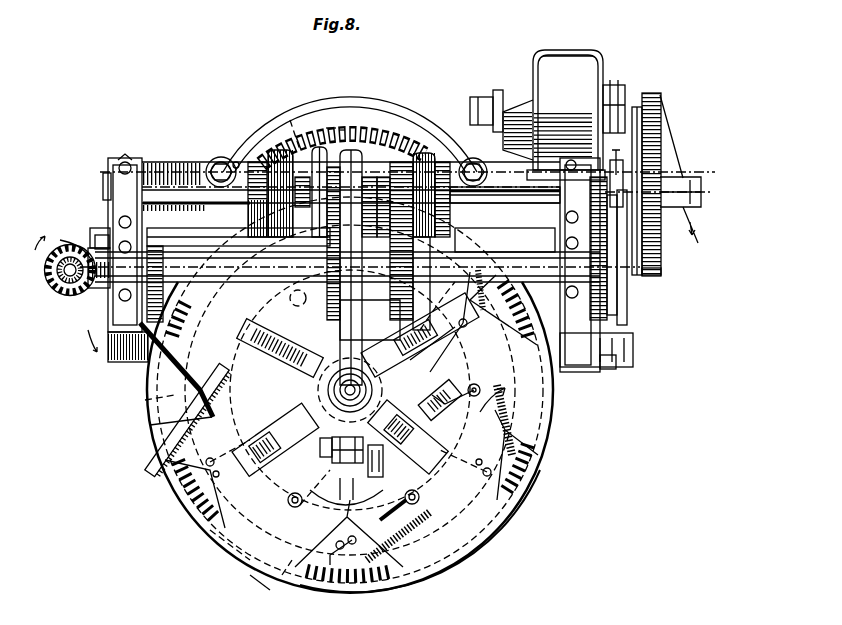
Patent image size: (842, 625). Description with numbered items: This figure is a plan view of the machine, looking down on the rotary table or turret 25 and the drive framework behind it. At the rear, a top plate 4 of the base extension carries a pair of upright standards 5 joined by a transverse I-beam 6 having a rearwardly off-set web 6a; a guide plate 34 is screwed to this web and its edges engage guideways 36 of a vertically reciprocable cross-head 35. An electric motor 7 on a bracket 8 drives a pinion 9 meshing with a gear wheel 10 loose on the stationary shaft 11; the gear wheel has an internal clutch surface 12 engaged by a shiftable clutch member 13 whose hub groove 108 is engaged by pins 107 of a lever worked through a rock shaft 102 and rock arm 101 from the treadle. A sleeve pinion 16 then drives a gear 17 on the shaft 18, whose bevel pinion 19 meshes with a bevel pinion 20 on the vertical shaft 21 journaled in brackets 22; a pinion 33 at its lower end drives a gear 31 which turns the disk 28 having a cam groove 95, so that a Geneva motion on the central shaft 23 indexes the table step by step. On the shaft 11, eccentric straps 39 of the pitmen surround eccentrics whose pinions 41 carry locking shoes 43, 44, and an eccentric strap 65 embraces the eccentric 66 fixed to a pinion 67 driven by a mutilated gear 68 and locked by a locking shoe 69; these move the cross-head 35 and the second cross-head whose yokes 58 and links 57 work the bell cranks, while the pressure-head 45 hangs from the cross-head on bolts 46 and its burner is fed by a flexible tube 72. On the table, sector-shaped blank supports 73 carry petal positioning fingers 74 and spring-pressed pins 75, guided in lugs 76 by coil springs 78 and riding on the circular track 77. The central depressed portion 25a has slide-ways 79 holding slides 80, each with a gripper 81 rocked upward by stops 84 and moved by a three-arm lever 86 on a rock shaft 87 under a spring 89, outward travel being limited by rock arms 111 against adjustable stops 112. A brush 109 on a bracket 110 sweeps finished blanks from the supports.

The top plate 4 is at (167, 172).
The standards 5 is at (122, 158).
The I-beam 6 is at (182, 250).
The off-set web 6a is at (433, 328).
The electric motor 7 is at (557, 53).
The bracket 8 is at (568, 56).
The pinion 9 is at (650, 95).
The gear wheel 10 is at (658, 278).
The stationary shaft 11 is at (497, 186).
The internal clutch surface 12 is at (640, 278).
The clutch member 13 is at (626, 142).
The pinion 16 is at (615, 128).
The gear 17 is at (627, 312).
The shaft 18 is at (106, 196).
The bevel pinion 19 is at (100, 228).
The bevel pinion 20 is at (58, 247).
The vertically extending shaft 21 is at (50, 253).
The brackets 22 is at (75, 236).
The shaft 23 is at (366, 390).
The rotary table 25 is at (252, 560).
The central depressed portion 25a is at (233, 532).
The disk 28 is at (148, 426).
The gear 31 is at (87, 326).
The pinion 33 is at (60, 294).
The guide plate 34 is at (415, 152).
The cross-head 35 is at (205, 228).
The guideways 36 is at (310, 140).
The eccentric straps 39 is at (280, 150).
The pinions 41 is at (256, 160).
The locking shoe 43 is at (190, 262).
The locking shoe 44 is at (234, 160).
The pressure-head 45 is at (296, 112).
The bolts 46 is at (221, 160).
The links 57 is at (338, 126).
The yokes 58 is at (330, 122).
The eccentric strap 65 is at (368, 175).
The eccentric 66 is at (385, 175).
The pinion 67 is at (325, 147).
The mutilated gear 68 is at (326, 262).
The locking shoe 69 is at (395, 268).
The flexible tube 72 is at (356, 150).
The blank supports 73 is at (537, 450).
The petal positioning fingers 74 is at (532, 490).
The blank positioning pins 75 is at (532, 466).
The lugs 76 is at (482, 410).
The circular track 77 is at (282, 577).
The coil springs 78 is at (355, 546).
The slide-ways 79 is at (395, 350).
The slide 80 is at (352, 440).
The gripper 81 is at (325, 487).
The stops 84 is at (320, 348).
The three-arm lever 86 is at (383, 470).
The rock shafts 87 is at (481, 386).
The spring 89 is at (540, 422).
The cam groove 95 is at (145, 400).
The rock arm 101 is at (608, 369).
The rock shaft 102 is at (614, 316).
The pins 107 is at (662, 232).
The groove 108 is at (622, 185).
The brush 109 is at (162, 452).
The bracket 110 is at (128, 360).
The rock arms 111 is at (510, 412).
The adjustable stops 112 is at (448, 393).